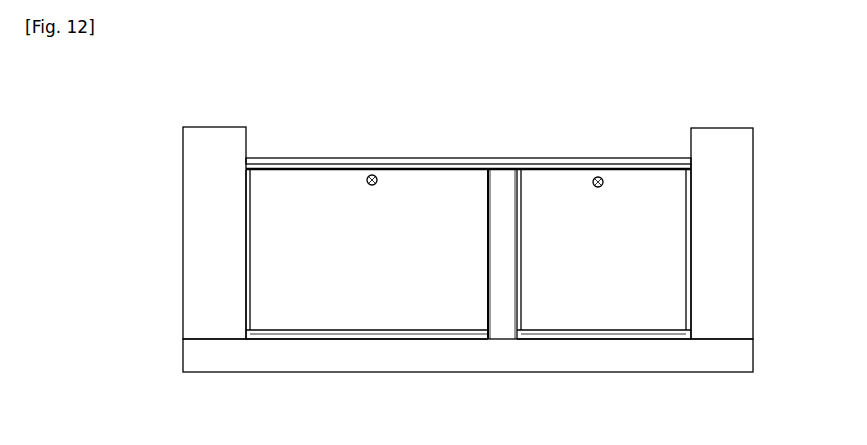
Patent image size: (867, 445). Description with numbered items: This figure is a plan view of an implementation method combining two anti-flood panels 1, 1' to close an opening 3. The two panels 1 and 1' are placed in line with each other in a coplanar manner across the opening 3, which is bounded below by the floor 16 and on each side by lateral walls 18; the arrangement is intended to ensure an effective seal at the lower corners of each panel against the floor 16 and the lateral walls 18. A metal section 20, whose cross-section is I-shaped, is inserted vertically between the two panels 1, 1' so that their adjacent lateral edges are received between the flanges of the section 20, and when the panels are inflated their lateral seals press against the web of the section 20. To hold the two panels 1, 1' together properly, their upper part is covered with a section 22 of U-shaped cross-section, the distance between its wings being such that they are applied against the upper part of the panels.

The anti-flood panel 1 is at (367, 222).
The anti-flood panel 1' is at (604, 215).
The opening 3 is at (279, 139).
The floor 16 is at (290, 376).
The lateral walls 18 is at (183, 247).
The metal section 20 is at (505, 300).
The U-shaped section 22 is at (423, 162).